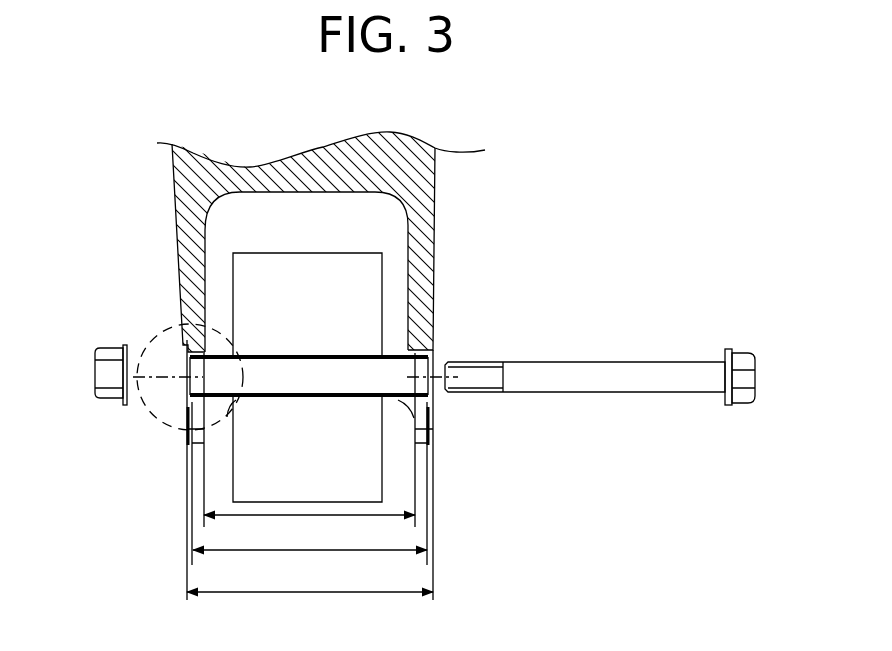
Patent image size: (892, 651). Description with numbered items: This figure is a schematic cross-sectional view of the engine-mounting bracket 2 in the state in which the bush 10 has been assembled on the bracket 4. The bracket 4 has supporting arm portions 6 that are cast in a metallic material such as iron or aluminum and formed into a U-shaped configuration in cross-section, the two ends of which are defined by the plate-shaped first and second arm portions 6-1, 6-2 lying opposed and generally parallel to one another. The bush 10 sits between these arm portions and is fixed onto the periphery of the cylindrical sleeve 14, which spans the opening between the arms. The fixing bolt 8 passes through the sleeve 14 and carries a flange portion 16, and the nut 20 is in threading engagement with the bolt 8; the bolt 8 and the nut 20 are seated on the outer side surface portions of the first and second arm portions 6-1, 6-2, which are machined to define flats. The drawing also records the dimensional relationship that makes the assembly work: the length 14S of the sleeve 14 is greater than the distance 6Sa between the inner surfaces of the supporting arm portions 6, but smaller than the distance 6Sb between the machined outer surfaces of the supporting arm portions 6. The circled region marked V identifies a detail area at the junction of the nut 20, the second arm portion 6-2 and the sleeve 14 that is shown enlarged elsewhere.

The engine-mounting bracket 2 is at (518, 175).
The bracket 4 is at (413, 130).
The supporting arm portions 6 is at (437, 252).
The first arm portion 6-1 is at (430, 330).
The second arm portion 6-2 is at (180, 238).
The fixing bolt 8 is at (603, 358).
The bush 10 is at (252, 460).
The cylindrical sleeve 14 is at (398, 401).
The flange portion 16 is at (727, 405).
The nut 20 is at (115, 393).
The section view indicator V is at (148, 340).
The distance between inner surfaces of the supporting arm portions 6Sa is at (309, 531).
The length of the sleeve 14S is at (310, 566).
The distance between outer surfaces of the supporting arm portions 6Sb is at (310, 608).